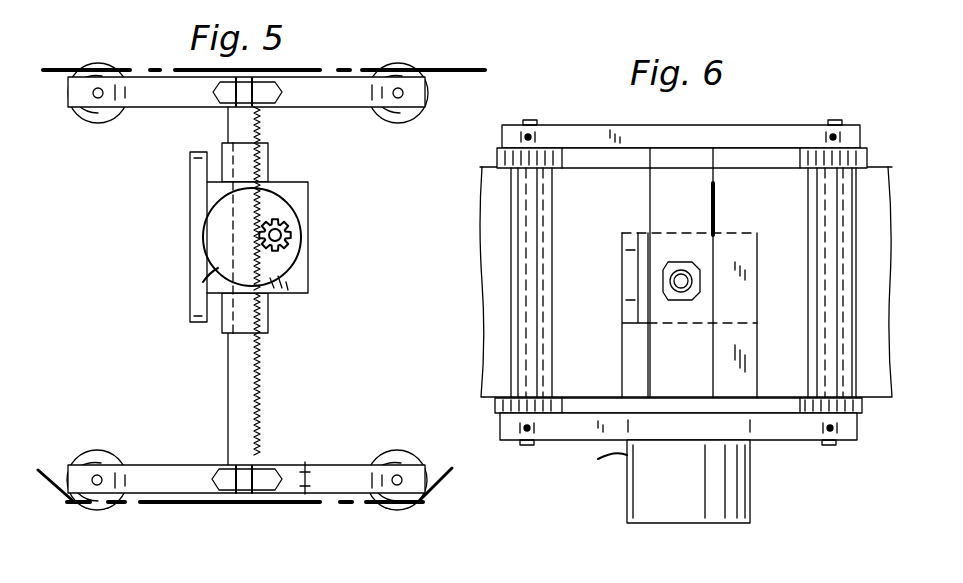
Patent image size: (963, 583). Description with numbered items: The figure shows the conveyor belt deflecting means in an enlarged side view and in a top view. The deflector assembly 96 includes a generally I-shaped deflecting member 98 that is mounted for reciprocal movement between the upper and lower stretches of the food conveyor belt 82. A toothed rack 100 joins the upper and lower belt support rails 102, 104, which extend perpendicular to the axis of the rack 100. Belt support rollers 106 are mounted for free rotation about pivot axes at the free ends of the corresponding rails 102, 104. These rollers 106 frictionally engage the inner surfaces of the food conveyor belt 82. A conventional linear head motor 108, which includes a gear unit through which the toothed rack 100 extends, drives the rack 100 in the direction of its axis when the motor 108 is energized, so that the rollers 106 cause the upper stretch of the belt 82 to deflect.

In FIG. 5, the food conveyor belt 82 is at (445, 70).
In FIG. 6, the food conveyor belt 82 is at (482, 254).
In FIG. 5, the deflector assembly 96 is at (157, 72).
In FIG. 6, the deflector assembly 96 is at (580, 120).
In FIG. 5, the deflecting member 98 is at (226, 357).
In FIG. 5, the toothed rack 100 is at (260, 357).
In FIG. 6, the toothed rack 100 is at (702, 268).
In FIG. 5, the upper belt support rail 102 is at (322, 76).
In FIG. 6, the upper belt support rail 102 is at (780, 120).
In FIG. 5, the lower belt support rail 104 is at (305, 463).
In FIG. 5, the belt support rollers 106 is at (99, 124).
In FIG. 6, the belt support rollers 106 is at (515, 200).
In FIG. 5, the linear head motor 108 is at (297, 215).
In FIG. 6, the linear head motor 108 is at (752, 458).